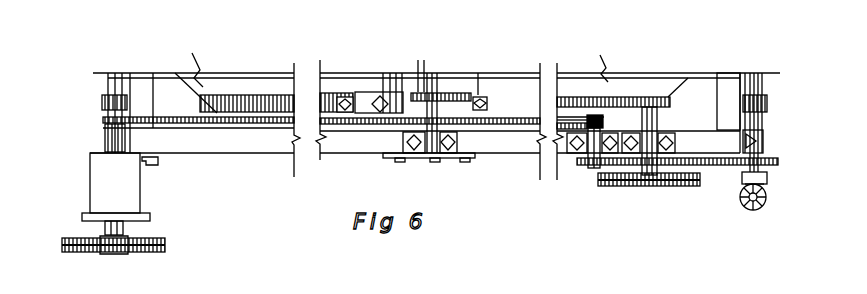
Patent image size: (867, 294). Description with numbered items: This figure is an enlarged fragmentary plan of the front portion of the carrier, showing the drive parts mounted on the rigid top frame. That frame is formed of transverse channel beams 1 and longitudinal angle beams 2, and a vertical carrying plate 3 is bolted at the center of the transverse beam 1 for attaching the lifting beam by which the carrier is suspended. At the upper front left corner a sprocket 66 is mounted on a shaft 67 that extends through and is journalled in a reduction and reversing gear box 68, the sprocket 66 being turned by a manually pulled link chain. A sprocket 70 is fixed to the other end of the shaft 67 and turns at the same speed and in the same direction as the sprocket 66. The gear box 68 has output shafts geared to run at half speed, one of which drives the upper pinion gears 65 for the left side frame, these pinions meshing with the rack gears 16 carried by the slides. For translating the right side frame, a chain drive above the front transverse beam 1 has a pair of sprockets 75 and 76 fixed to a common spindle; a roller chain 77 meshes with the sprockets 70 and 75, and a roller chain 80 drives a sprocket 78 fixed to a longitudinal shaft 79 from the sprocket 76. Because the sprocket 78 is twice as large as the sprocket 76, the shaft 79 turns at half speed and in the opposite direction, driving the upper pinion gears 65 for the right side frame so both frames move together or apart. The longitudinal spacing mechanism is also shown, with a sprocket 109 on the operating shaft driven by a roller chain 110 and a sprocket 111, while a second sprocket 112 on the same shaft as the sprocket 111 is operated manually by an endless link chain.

The transverse channel beam 1 is at (260, 155).
The longitudinal angle beam 2 is at (727, 82).
The vertical carrying plate 3 is at (443, 159).
The upper rack gear 16 is at (223, 105).
The upper pinion gear 65 is at (103, 100).
The sprocket 66 is at (165, 248).
The shaft 67 is at (105, 131).
The reduction and reversing gear box 68 is at (110, 193).
The sprocket 70 is at (103, 120).
The sprocket 75 is at (604, 117).
The sprocket 76 is at (583, 167).
The roller chain 77 is at (250, 126).
The sprocket 78 is at (778, 161).
The longitudinal shaft 79 is at (762, 85).
The roller chain 80 is at (745, 203).
The sprocket 109 is at (423, 100).
The roller chain 110 is at (618, 100).
The sprocket 111 is at (655, 103).
The sprocket 112 is at (668, 188).